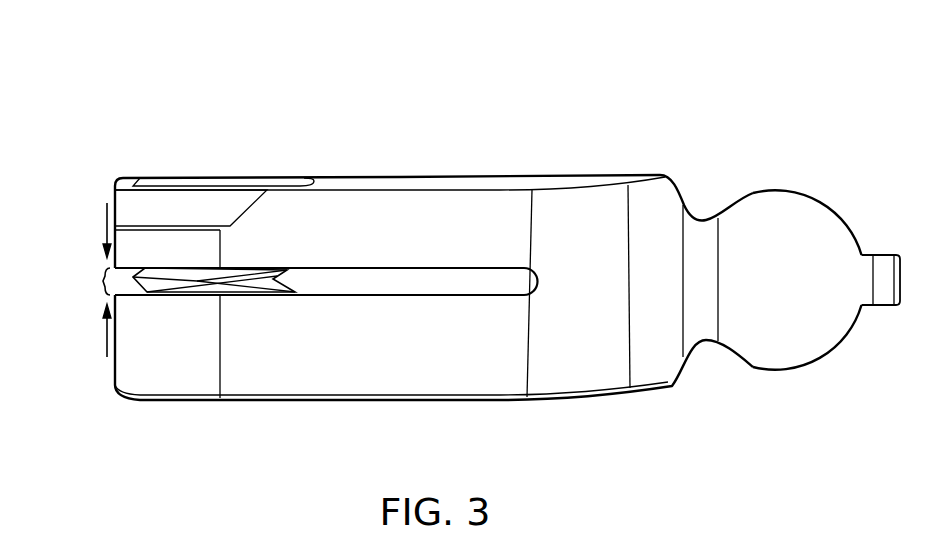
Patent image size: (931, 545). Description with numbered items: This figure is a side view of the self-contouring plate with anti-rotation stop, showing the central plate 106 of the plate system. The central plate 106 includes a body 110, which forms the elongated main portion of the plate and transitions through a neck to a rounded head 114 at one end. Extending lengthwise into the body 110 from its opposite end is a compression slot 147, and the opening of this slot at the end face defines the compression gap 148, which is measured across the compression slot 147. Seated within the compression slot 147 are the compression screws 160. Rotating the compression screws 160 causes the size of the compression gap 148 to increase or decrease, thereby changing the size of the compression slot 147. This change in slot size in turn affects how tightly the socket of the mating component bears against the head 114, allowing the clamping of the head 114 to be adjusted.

The central plate 106 is at (456, 242).
The body 110 is at (498, 207).
The head 114 is at (788, 222).
The compression slot 147 is at (370, 286).
The compression gap 148 is at (103, 282).
The compression screws 160 is at (215, 283).